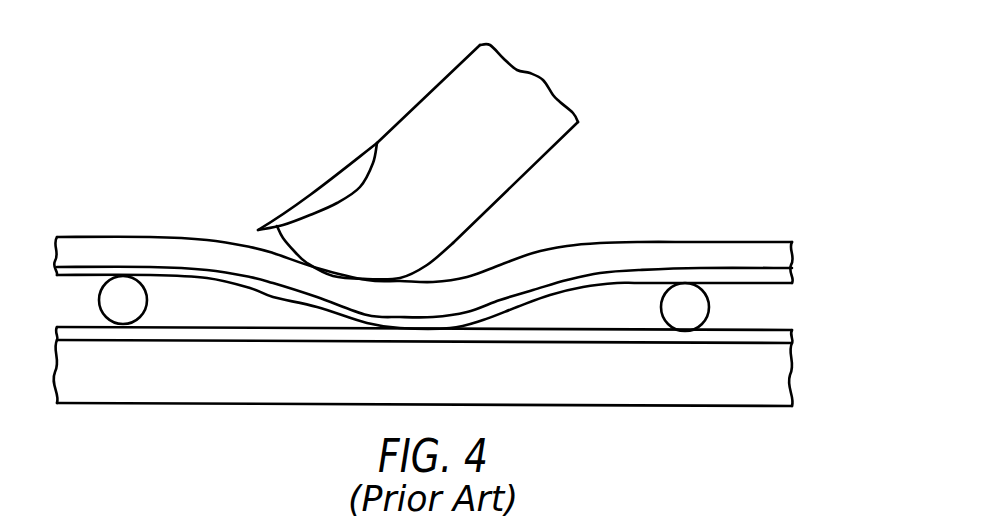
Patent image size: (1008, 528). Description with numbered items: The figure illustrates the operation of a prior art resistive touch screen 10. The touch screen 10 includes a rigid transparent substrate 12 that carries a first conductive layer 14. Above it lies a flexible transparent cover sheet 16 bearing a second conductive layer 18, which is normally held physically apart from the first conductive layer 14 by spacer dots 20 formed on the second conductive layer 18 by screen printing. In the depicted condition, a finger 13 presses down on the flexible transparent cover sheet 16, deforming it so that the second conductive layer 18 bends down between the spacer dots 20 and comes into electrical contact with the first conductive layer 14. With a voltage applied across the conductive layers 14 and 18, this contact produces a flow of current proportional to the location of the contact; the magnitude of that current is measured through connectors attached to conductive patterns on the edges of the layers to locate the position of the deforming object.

The resistive touch screen 10 is at (748, 202).
The rigid transparent substrate 12 is at (793, 385).
The finger 13 is at (520, 162).
The first conductive layer 14 is at (793, 338).
The flexible transparent cover sheet 16 is at (793, 253).
The second conductive layer 18 is at (793, 273).
The spacer dots 20 is at (680, 293).